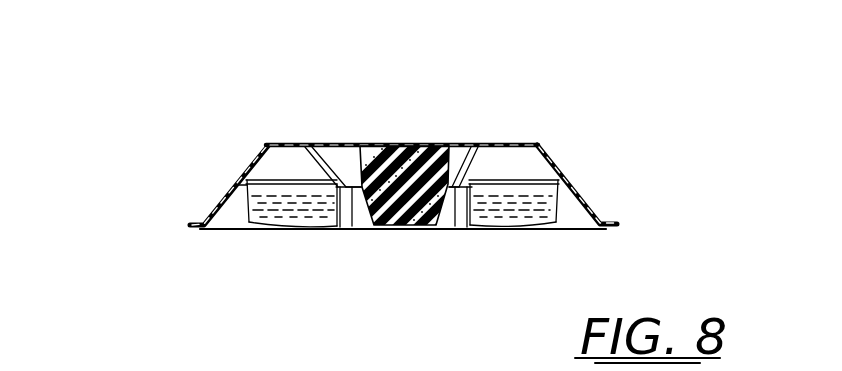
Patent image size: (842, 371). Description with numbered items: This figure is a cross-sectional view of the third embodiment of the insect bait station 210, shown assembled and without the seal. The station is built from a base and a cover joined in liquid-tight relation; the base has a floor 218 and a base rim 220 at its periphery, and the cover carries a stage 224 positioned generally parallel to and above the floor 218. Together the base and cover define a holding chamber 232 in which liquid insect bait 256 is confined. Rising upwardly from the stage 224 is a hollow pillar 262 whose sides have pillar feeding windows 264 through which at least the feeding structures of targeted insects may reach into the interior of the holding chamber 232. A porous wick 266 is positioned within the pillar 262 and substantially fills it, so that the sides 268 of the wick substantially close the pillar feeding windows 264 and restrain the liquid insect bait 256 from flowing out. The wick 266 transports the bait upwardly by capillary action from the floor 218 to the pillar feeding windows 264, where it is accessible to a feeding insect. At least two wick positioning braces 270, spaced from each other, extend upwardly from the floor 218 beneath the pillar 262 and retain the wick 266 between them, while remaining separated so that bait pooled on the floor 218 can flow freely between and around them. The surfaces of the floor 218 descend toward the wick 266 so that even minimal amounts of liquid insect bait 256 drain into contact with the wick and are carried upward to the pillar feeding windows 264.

The insect bait station 210 is at (166, 157).
The floor 218 is at (298, 229).
The base rim 220 is at (200, 231).
The stage 224 is at (476, 150).
The holding chamber 232 is at (523, 161).
The liquid insect bait 256 is at (540, 207).
The hollow pillar 262 is at (425, 150).
The pillar feeding windows 264 is at (338, 162).
The porous wick 266 is at (385, 150).
The sides of the wick 268 is at (318, 150).
The wick positioning braces 270 is at (352, 226).